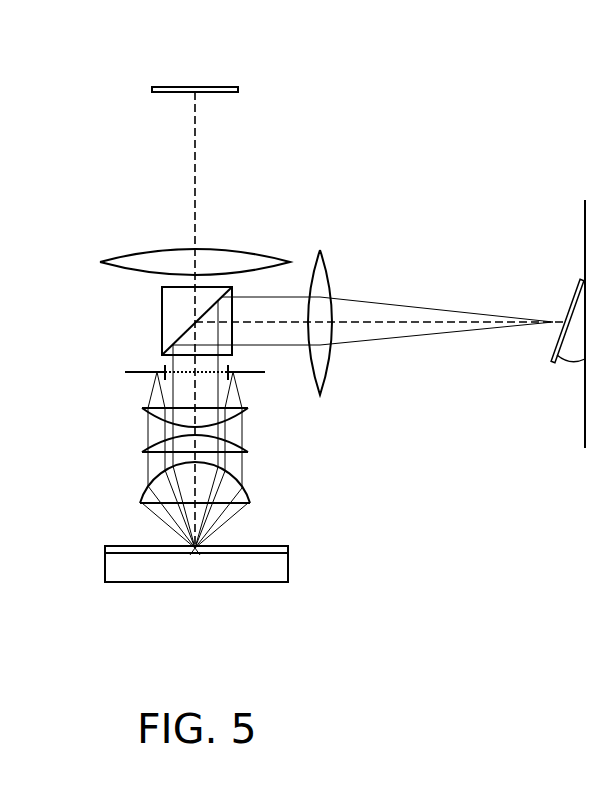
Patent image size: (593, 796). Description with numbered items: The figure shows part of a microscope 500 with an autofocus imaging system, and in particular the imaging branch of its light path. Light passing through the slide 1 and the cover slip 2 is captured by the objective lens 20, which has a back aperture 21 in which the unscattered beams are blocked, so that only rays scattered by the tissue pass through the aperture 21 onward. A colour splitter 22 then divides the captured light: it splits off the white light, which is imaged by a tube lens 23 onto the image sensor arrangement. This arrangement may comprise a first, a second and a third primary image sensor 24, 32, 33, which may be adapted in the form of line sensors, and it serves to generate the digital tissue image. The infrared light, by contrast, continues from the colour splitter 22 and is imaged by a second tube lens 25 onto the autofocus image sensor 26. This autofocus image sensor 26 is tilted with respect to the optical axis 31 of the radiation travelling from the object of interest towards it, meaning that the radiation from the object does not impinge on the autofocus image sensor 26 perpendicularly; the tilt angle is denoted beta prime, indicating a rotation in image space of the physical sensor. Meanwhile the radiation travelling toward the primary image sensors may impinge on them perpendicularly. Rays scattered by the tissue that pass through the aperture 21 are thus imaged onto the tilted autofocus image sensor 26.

The slide 1 is at (192, 572).
The cover slip 2 is at (107, 548).
The objective lens 20 is at (158, 412).
The back aperture 21 is at (125, 374).
The colour splitter 22 is at (162, 292).
The tube lens 23 is at (120, 257).
The first primary image sensor 24 is at (153, 56).
The second tube lens 25 is at (327, 268).
The autofocus image sensor 26 is at (582, 282).
The optical axis 31 is at (385, 323).
The second primary image sensor 32 is at (195, 89).
The third primary image sensor 33 is at (168, 87).
The microscope 500 is at (301, 320).